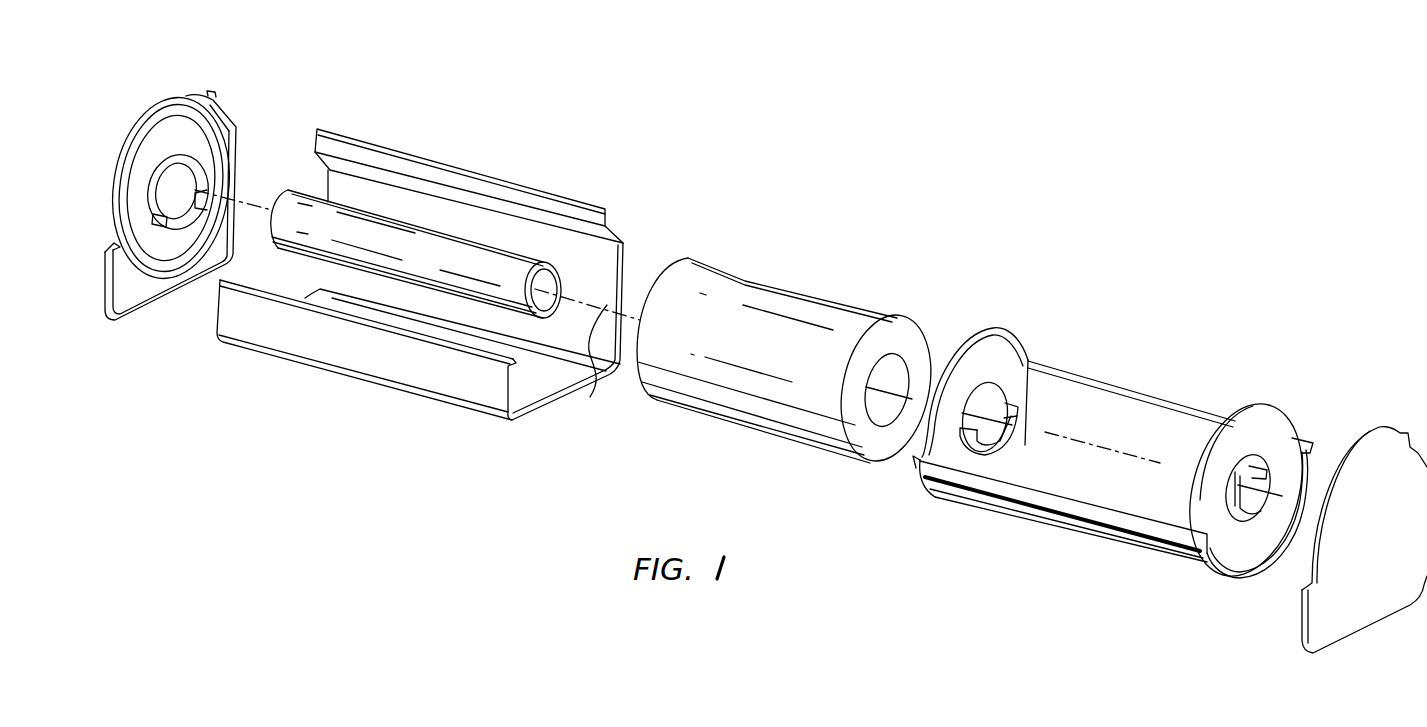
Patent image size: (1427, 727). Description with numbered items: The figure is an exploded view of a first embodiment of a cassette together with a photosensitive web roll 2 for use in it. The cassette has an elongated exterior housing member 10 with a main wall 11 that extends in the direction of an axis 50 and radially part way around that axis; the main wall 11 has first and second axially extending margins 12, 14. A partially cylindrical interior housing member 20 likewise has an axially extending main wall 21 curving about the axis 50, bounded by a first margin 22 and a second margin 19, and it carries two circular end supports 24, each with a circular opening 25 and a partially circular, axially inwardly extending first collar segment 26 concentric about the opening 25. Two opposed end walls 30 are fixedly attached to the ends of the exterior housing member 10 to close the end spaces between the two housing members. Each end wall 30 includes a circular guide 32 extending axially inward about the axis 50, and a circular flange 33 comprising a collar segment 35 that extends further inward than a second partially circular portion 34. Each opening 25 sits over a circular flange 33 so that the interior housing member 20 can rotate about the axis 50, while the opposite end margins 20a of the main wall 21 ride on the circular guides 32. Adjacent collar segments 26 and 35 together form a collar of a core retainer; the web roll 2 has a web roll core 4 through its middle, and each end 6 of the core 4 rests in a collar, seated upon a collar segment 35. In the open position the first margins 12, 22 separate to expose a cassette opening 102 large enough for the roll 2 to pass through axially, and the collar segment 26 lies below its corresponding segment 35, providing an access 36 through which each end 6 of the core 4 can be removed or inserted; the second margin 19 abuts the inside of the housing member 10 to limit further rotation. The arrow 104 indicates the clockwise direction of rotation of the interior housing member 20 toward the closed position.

The photosensitive web roll 2 is at (805, 313).
The web roll core 4 is at (419, 238).
The end of core 6 is at (281, 203).
The exterior housing member 10 is at (494, 269).
The main wall 11 is at (625, 257).
The first axially extending margin 12 is at (412, 165).
The second axially extending margin 14 is at (365, 359).
The second margin 19 is at (1155, 400).
The interior housing member 20 is at (1089, 484).
The end margin 20a is at (918, 488).
The main wall 21 is at (1158, 560).
The first margin 22 is at (1117, 523).
The circular end support 24 is at (1285, 426).
The circular opening 25 is at (977, 392).
The first collar segment 26 is at (987, 382).
The end wall 30 is at (236, 118).
The circular guide 32 is at (150, 133).
The circular flange 33 is at (157, 224).
The second partially circular portion 34 is at (157, 178).
The collar segment 35 is at (192, 214).
The access 36 is at (175, 157).
The axis 50 is at (594, 367).
The cassette opening 102 is at (448, 327).
The arrow 104 is at (1107, 458).